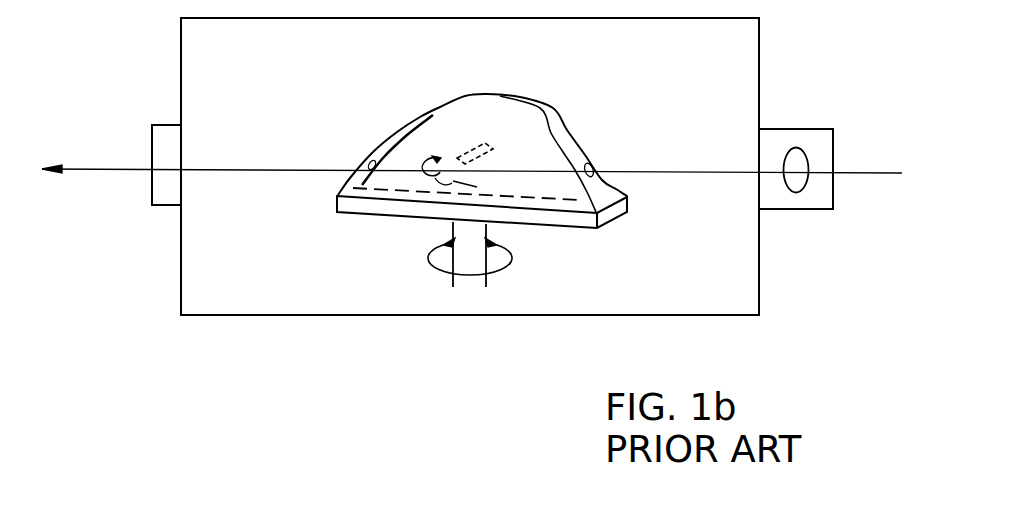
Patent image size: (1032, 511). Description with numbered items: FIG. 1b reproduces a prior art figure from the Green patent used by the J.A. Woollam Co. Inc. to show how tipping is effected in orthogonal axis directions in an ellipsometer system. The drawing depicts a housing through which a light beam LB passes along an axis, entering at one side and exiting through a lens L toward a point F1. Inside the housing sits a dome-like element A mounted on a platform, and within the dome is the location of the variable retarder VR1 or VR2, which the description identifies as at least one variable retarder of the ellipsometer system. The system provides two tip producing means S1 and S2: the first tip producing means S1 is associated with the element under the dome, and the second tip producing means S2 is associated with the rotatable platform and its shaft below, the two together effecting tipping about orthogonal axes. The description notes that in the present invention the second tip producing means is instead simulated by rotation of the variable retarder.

The light beam LB is at (472, 136).
The lens L is at (823, 136).
The focal point F1 is at (879, 218).
The dome aperture / hemispherical enclosure A is at (530, 192).
The tip producing means S1 is at (577, 111).
The tip producing means S2 is at (476, 249).
The variable retarder VR1 is at (593, 111).
The variable retarder VR2 is at (593, 111).